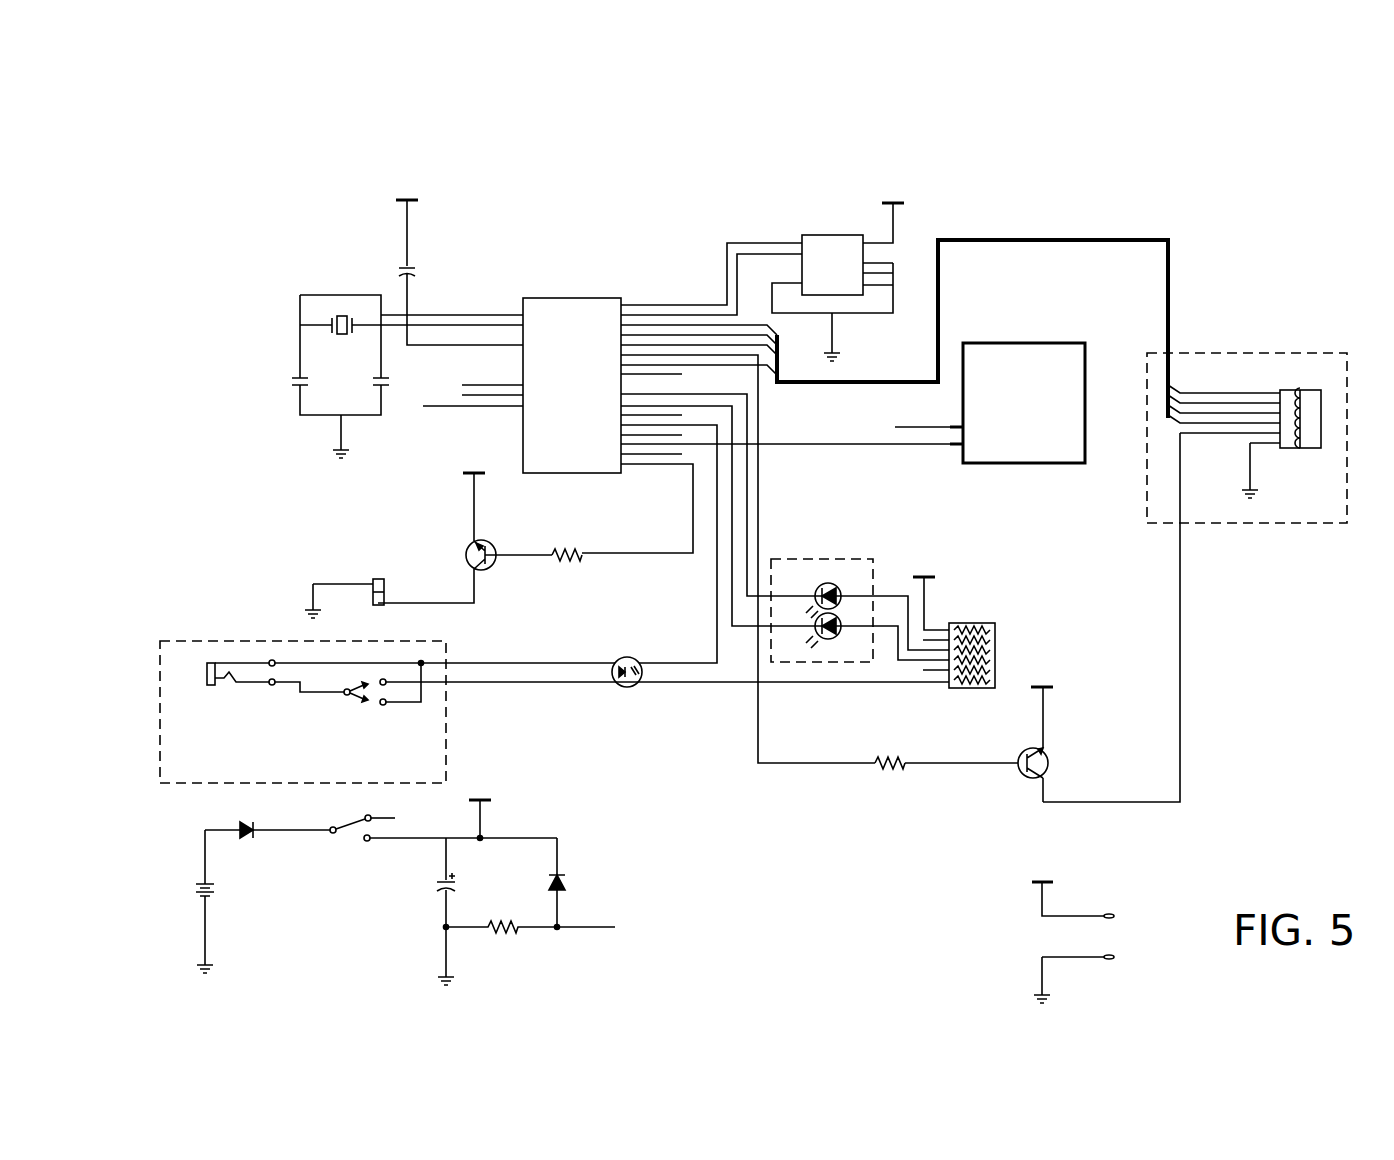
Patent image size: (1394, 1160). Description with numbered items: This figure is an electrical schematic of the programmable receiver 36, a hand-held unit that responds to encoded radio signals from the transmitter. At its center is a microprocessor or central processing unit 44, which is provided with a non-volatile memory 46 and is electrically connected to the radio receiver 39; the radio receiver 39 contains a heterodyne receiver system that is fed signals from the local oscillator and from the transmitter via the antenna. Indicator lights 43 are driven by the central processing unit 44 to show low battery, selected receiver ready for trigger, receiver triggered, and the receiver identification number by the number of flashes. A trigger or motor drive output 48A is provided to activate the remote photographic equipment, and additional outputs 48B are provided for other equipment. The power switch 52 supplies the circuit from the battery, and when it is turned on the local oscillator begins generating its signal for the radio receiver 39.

The programmable receiver 36 is at (202, 254).
The microprocessor or central processing unit (CPU) 44 is at (600, 298).
The non-volatile memory 46 is at (852, 235).
The radio receiver 39 is at (1027, 343).
The additional outputs 48B is at (1266, 353).
The indicator lights 43 is at (810, 559).
The trigger or motor drive output 48A is at (222, 641).
The power switch 52 is at (334, 822).